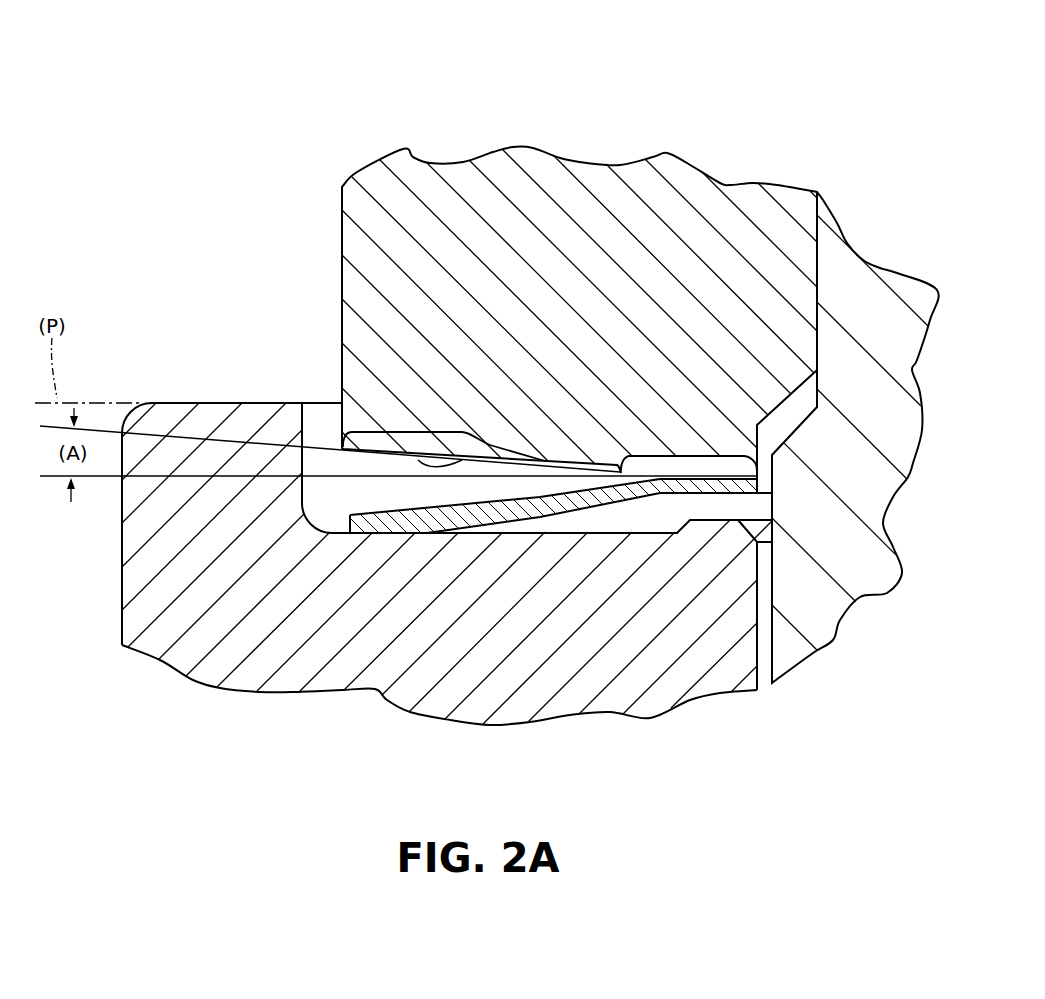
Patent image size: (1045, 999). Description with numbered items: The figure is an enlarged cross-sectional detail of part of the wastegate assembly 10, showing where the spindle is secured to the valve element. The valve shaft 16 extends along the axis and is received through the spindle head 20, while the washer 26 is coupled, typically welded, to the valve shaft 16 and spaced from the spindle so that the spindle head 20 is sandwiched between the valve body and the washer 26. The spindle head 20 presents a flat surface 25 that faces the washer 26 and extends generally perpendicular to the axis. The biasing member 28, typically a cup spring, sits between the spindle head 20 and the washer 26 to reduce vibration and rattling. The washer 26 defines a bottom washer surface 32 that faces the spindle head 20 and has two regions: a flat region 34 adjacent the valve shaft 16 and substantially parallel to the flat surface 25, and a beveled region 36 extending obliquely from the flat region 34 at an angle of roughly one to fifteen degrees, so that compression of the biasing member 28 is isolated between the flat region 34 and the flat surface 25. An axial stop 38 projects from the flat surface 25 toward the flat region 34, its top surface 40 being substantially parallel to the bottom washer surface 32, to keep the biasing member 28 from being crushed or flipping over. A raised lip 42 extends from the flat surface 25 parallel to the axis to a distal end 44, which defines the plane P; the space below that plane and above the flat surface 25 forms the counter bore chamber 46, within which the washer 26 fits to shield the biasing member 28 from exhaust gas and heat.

The wastegate assembly 10 is at (325, 86).
The valve shaft 16 is at (848, 267).
The spindle head 20 is at (475, 549).
The flat surface 25 is at (620, 533).
The washer 26 is at (352, 236).
The biasing member 28 is at (440, 515).
The bottom washer surface 32 is at (418, 460).
The flat region 34 is at (698, 456).
The beveled region 36 is at (482, 443).
The axial stop 38 is at (708, 530).
The top surface 40 is at (715, 520).
The raised lip 42 is at (124, 497).
The distal end 44 is at (191, 402).
The counter bore chamber 46 is at (330, 414).